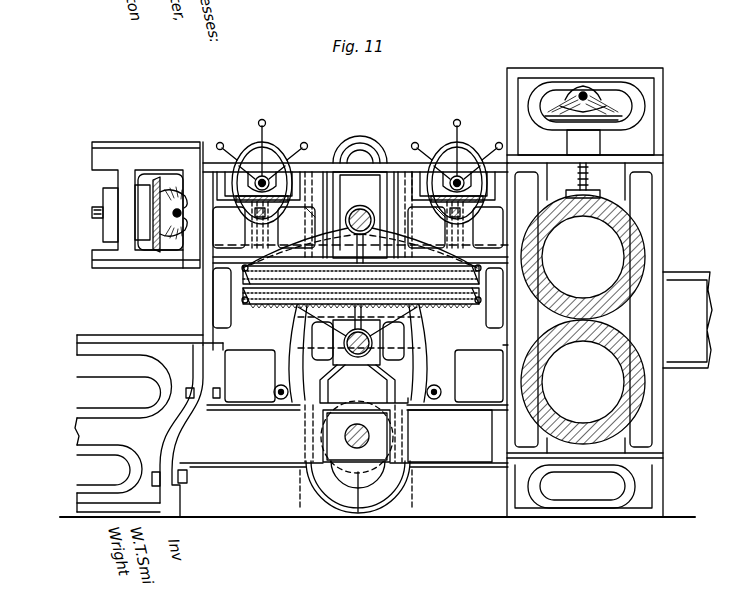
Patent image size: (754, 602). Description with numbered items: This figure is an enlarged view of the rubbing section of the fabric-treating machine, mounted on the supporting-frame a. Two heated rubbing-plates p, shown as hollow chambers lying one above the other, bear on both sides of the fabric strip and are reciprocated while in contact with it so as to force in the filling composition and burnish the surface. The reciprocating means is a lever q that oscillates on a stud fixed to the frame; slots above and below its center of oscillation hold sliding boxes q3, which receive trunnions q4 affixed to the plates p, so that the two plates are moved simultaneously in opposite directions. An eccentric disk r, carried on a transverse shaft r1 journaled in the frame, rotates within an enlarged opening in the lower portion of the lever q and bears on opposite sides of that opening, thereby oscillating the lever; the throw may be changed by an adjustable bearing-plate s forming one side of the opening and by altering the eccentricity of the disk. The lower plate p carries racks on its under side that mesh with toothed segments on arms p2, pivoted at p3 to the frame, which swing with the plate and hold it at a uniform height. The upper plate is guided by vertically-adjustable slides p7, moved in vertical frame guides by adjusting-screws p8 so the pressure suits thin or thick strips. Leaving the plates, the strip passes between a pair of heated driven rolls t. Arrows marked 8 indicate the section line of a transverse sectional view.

The section line 8 8 is at (480, 94).
The supporting-frame a is at (172, 486).
The heated rubbing-plates p is at (243, 297).
The arms p2 is at (275, 361).
The pivots of the arms p3 is at (458, 392).
The vertically-adjustable slides p7 is at (258, 247).
The adjusting-screws p8 is at (252, 203).
The lever q is at (362, 150).
The sliding boxes q3 is at (373, 205).
The trunnions q4 is at (330, 190).
The eccentric disk r is at (360, 476).
The transverse shaft r1 is at (322, 470).
The adjustable bearing-plate s is at (393, 437).
The rolls t is at (637, 246).